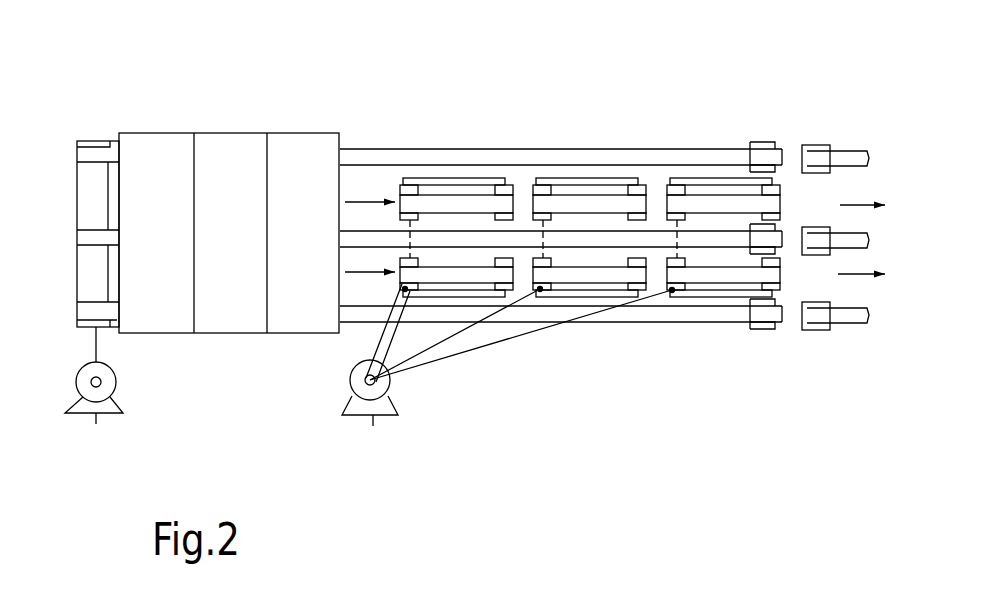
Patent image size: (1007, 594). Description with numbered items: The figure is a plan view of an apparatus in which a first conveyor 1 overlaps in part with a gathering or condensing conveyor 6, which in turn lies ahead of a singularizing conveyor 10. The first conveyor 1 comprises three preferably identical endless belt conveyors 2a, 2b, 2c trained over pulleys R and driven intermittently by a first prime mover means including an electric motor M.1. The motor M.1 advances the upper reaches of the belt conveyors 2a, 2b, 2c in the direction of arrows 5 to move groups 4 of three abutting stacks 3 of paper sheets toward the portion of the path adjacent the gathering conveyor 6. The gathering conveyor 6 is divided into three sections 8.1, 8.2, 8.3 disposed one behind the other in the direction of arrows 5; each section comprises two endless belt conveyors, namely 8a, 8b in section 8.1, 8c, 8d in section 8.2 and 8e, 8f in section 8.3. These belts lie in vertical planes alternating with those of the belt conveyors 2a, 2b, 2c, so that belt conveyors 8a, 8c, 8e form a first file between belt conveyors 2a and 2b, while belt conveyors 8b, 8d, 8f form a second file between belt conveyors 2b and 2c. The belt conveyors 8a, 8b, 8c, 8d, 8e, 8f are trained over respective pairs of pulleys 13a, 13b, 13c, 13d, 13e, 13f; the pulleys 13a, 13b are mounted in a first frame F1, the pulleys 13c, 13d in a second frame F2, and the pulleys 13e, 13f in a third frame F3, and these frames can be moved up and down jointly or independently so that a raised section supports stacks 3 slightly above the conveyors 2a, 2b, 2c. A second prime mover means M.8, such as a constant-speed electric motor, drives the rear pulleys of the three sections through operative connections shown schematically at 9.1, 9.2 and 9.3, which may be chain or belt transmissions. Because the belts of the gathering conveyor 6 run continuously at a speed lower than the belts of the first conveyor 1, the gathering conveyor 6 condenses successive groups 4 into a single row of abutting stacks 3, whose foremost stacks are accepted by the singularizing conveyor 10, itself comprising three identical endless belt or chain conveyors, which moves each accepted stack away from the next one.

The first conveyor 1 is at (325, 343).
The endless belt conveyor 2a is at (360, 157).
The endless belt conveyor 2b is at (360, 239).
The endless belt conveyor 2c is at (360, 316).
The stack 3 is at (172, 143).
The group 4 is at (155, 131).
The arrow 5 is at (364, 200).
The gathering conveyor 6 is at (723, 465).
The endless belt conveyor 8a is at (457, 203).
The endless belt conveyor 8b is at (482, 272).
The endless belt conveyor 8c is at (592, 205).
The endless belt conveyor 8d is at (588, 275).
The endless belt conveyor 8e is at (715, 205).
The endless belt conveyor 8f is at (700, 275).
The section of the gathering conveyor 8.1 is at (459, 388).
The section of the gathering conveyor 8.2 is at (600, 395).
The section of the gathering conveyor 8.3 is at (744, 360).
The operative connection 9.1 is at (383, 327).
The operative connection 9.2 is at (460, 331).
The operative connection 9.3 is at (519, 336).
The singularizing conveyor 10 is at (847, 133).
The pulleys 13a is at (400, 177).
The pulleys 13b is at (403, 297).
The pulleys 13c is at (543, 178).
The pulleys 13d is at (548, 297).
The pulleys 13e is at (677, 180).
The pulleys 13f is at (672, 297).
The first frame F1 is at (430, 180).
The second frame F2 is at (573, 180).
The third frame F3 is at (702, 180).
The pulleys R is at (92, 141).
The electric motor M.1 is at (94, 388).
The prime mover means M.8 is at (370, 406).